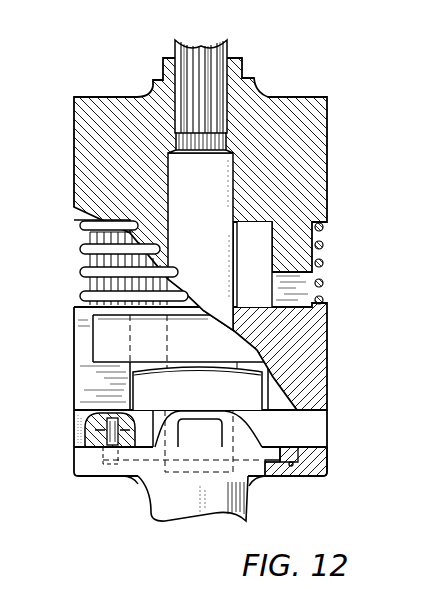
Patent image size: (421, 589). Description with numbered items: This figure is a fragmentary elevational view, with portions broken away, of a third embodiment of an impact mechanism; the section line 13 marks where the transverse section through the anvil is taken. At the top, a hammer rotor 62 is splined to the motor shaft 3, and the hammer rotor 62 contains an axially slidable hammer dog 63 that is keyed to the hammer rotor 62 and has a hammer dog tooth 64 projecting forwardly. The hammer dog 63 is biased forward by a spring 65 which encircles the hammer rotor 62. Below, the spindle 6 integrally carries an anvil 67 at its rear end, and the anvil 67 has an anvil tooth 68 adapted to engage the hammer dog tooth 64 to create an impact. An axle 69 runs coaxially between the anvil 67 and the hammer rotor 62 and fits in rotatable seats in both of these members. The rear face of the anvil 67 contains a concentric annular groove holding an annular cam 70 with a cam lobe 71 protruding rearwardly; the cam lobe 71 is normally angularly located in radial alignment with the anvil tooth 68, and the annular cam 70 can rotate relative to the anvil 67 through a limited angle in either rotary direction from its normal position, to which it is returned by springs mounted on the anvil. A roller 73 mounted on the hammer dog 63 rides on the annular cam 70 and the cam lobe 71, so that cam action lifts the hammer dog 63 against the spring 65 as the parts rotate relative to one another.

The motor shaft 3 is at (221, 50).
The spindle 6 is at (248, 493).
The section line 13- 13 is at (364, 462).
The hammer rotor 62 is at (313, 167).
The hammer dog 63 is at (197, 397).
The hammer dog tooth 64 is at (82, 422).
The spring 65 is at (323, 263).
The anvil 67 is at (320, 447).
The anvil tooth 68 is at (212, 447).
The axle 69 is at (203, 224).
The annular cam 70 is at (281, 448).
The cam lobe 71 is at (238, 433).
The roller 73 is at (104, 410).